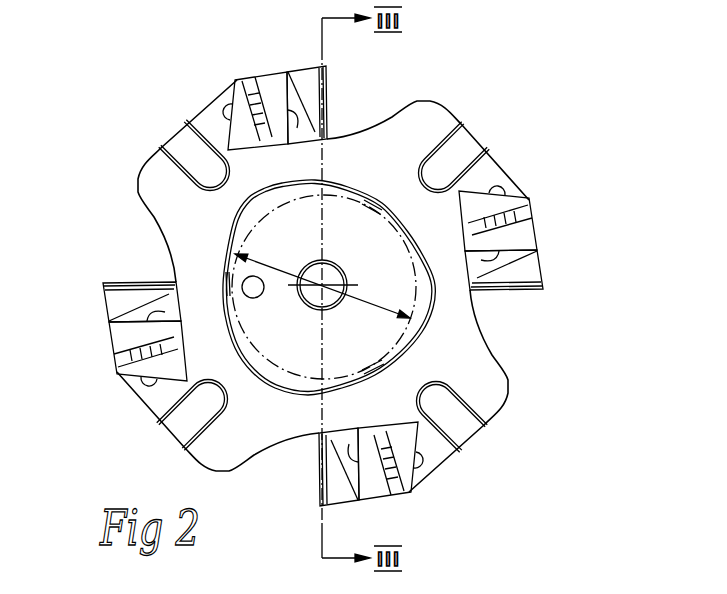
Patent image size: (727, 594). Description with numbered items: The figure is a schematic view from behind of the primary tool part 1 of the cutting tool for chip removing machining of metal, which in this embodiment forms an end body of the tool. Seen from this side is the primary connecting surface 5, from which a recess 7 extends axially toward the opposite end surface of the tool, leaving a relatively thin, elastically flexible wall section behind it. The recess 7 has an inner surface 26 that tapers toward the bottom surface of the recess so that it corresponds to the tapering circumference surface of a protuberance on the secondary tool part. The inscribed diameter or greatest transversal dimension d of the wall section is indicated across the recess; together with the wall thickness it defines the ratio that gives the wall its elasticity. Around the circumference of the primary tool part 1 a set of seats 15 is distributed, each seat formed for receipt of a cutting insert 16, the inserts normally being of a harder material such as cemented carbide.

The primary tool part 1 is at (128, 130).
The primary connecting surface 5 is at (484, 387).
The recess 7 is at (342, 232).
The seat 15 is at (240, 95).
The cutting insert 16 is at (229, 118).
The inner surface 26 is at (233, 233).
The inscribed diameter or greatest transversal dimension d is at (362, 308).